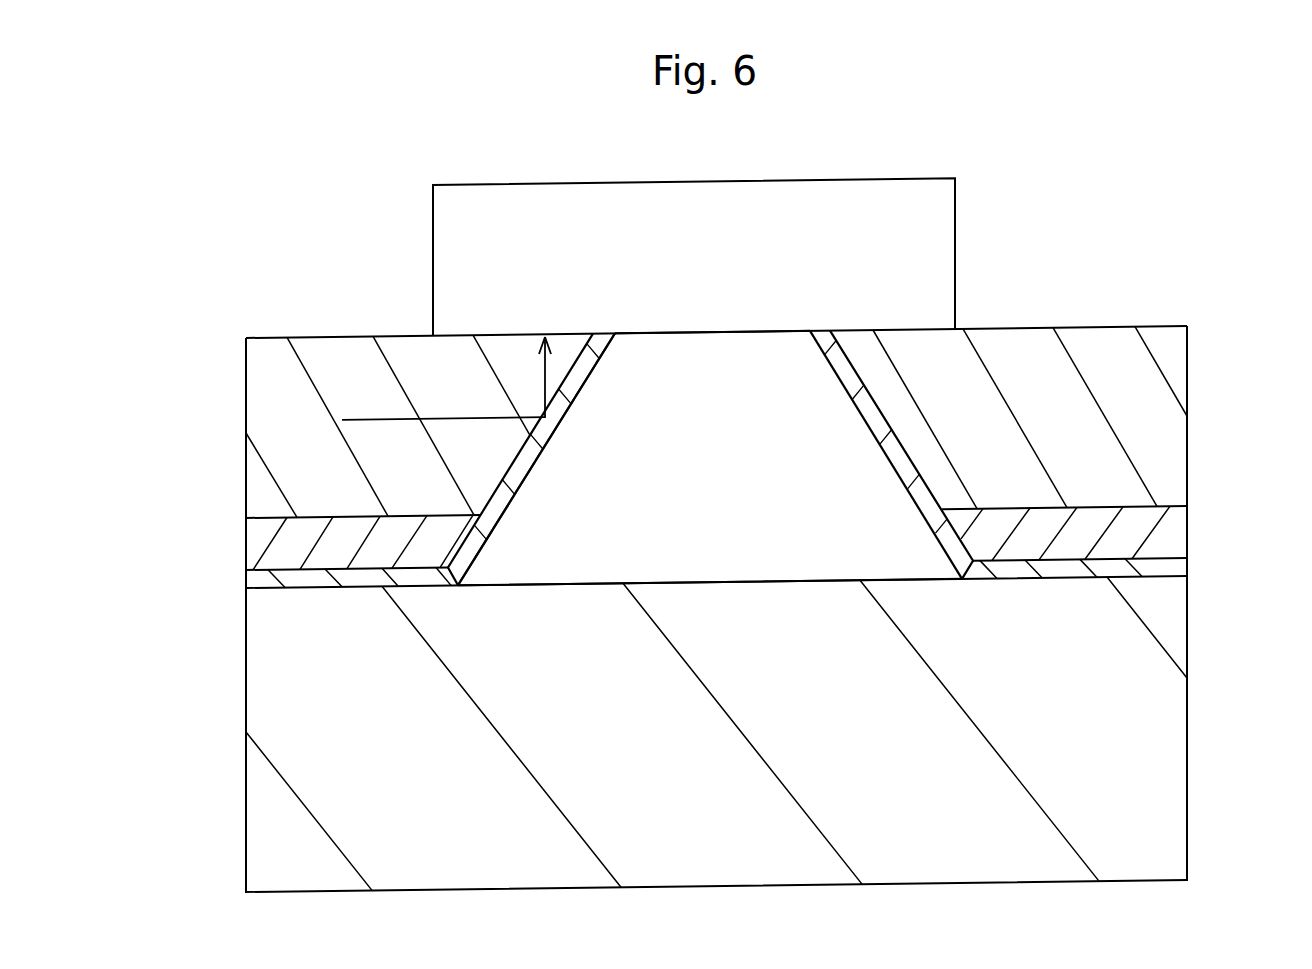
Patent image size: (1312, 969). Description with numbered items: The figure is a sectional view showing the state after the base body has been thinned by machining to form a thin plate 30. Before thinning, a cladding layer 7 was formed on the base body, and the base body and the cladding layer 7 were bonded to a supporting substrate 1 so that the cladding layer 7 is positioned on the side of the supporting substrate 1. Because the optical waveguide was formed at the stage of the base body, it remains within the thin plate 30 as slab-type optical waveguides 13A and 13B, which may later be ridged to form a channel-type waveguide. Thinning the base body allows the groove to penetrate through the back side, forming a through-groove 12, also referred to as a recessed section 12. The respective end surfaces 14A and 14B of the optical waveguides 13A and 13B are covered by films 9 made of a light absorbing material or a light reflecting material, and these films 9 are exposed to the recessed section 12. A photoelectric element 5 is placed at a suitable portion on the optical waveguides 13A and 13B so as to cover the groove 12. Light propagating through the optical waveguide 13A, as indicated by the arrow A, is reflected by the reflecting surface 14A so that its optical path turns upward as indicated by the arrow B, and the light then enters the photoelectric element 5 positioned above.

The supporting substrate 1 is at (1170, 722).
The photoelectric element 5 is at (743, 247).
The cladding layer 7 is at (268, 540).
The film 9 is at (522, 492).
The through-groove 12 is at (733, 462).
The slab-type optical waveguide 13A is at (445, 368).
The slab-type optical waveguide 13B is at (1040, 383).
The end surface 14A is at (550, 432).
The end surface 14B is at (893, 467).
The thin plate 30 is at (1227, 323).
The arrow A is at (377, 420).
The arrow B is at (545, 371).